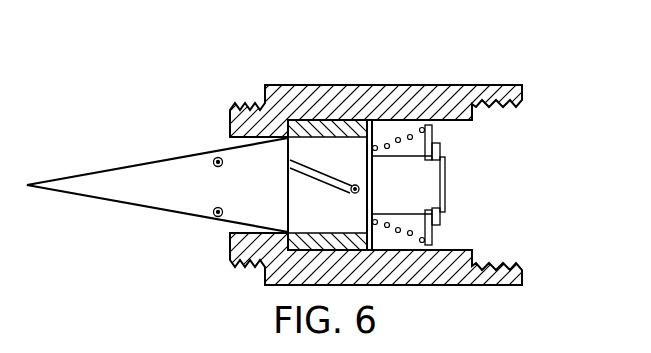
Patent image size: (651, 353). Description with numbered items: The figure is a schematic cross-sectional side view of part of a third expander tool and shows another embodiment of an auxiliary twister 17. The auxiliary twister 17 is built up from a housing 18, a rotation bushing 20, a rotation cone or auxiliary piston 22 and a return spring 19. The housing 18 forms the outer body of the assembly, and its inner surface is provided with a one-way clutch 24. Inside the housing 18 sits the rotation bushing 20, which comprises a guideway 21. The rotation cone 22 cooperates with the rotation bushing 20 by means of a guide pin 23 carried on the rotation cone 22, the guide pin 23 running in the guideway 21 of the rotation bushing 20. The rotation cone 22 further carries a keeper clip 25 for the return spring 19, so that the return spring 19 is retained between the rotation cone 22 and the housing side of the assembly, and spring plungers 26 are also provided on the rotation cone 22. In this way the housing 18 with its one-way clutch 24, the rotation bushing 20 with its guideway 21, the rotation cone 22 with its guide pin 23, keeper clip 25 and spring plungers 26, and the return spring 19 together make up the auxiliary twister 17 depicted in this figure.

The auxiliary twister 17 is at (395, 66).
The housing 18 is at (437, 100).
The return spring 19 is at (399, 233).
The rotation bushing 20 is at (328, 213).
The guideway 21 is at (320, 177).
The rotation cone 22 is at (125, 179).
The guide pin 23 is at (353, 186).
The one-way clutch 24 is at (288, 235).
The keeper clip 25 is at (433, 225).
The spring plungers 26 is at (198, 162).